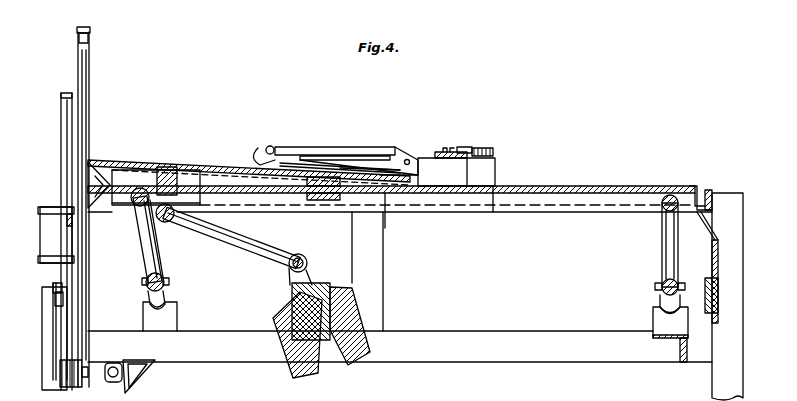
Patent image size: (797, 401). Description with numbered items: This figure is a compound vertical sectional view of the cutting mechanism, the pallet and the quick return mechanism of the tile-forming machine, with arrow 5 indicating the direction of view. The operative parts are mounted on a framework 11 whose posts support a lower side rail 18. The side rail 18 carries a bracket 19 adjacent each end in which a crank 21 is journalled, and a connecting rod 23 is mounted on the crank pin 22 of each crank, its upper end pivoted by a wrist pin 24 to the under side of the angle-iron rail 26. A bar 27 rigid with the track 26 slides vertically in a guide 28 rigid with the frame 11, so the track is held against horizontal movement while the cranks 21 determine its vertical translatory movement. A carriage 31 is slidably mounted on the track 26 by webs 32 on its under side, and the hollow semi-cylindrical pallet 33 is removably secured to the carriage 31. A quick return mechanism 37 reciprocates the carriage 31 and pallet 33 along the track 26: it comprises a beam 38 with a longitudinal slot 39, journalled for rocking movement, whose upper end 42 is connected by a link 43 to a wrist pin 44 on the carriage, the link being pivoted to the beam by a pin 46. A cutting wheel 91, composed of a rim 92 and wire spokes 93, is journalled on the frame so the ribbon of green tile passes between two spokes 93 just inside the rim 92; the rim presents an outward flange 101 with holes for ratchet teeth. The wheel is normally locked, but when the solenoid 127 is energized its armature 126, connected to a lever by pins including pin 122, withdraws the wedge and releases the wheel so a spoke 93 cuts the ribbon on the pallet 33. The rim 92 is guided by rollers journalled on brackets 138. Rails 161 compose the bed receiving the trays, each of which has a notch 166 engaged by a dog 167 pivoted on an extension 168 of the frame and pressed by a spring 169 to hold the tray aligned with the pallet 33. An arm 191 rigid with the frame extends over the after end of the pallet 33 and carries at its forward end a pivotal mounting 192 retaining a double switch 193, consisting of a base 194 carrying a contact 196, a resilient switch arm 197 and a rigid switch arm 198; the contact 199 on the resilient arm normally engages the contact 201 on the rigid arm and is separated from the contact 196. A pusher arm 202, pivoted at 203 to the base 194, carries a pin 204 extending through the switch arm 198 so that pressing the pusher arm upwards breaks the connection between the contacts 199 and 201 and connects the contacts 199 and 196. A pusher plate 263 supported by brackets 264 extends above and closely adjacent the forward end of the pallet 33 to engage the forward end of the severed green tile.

The direction arrow 5 is at (124, 81).
The framework 11 is at (743, 222).
The lower side rail 18 is at (627, 356).
The bracket 19 is at (660, 322).
The crank 21 is at (163, 297).
The crank pin 22 is at (165, 280).
The connecting rod 23 is at (662, 256).
The wrist pin 24 is at (672, 194).
The rail 26 is at (600, 186).
The bar 27 is at (718, 265).
The guide 28 is at (718, 302).
The carriage 31 is at (208, 168).
The web 32 is at (170, 167).
The pallet 33 is at (130, 162).
The quick return mechanism 37 is at (402, 313).
The beam 38 is at (292, 374).
The slot 39 is at (330, 368).
The upper end of beam 42 is at (290, 292).
The link 43 is at (236, 243).
The wrist pin 44 is at (167, 222).
The pin 46 is at (306, 261).
The cutting wheel 91 is at (91, 61).
The rim 92 is at (78, 41).
The spokes 93 is at (78, 117).
The flange 101 is at (83, 29).
The pin 122 is at (56, 298).
The armature 126 is at (53, 283).
The solenoid 127 is at (45, 250).
The bracket 138 is at (61, 93).
The rails 161 is at (712, 192).
The notch 166 is at (496, 154).
The dog 167 is at (478, 148).
The extension of the frame 168 is at (456, 172).
The spring 169 is at (452, 150).
The arm 191 is at (305, 147).
The pivotal mounting 192 is at (272, 147).
The double switch 193 is at (343, 134).
The base 194 is at (357, 160).
The contact 196 is at (382, 163).
The resilient switch arm 197 is at (400, 165).
The rigid switch arm 198 is at (412, 166).
The contact 199 is at (392, 160).
The contact 201 is at (372, 158).
The pusher arm 202 is at (305, 200).
The pivot 203 is at (254, 142).
The pin 204 is at (334, 158).
The pusher plate 263 is at (90, 162).
The brackets 264 is at (98, 206).